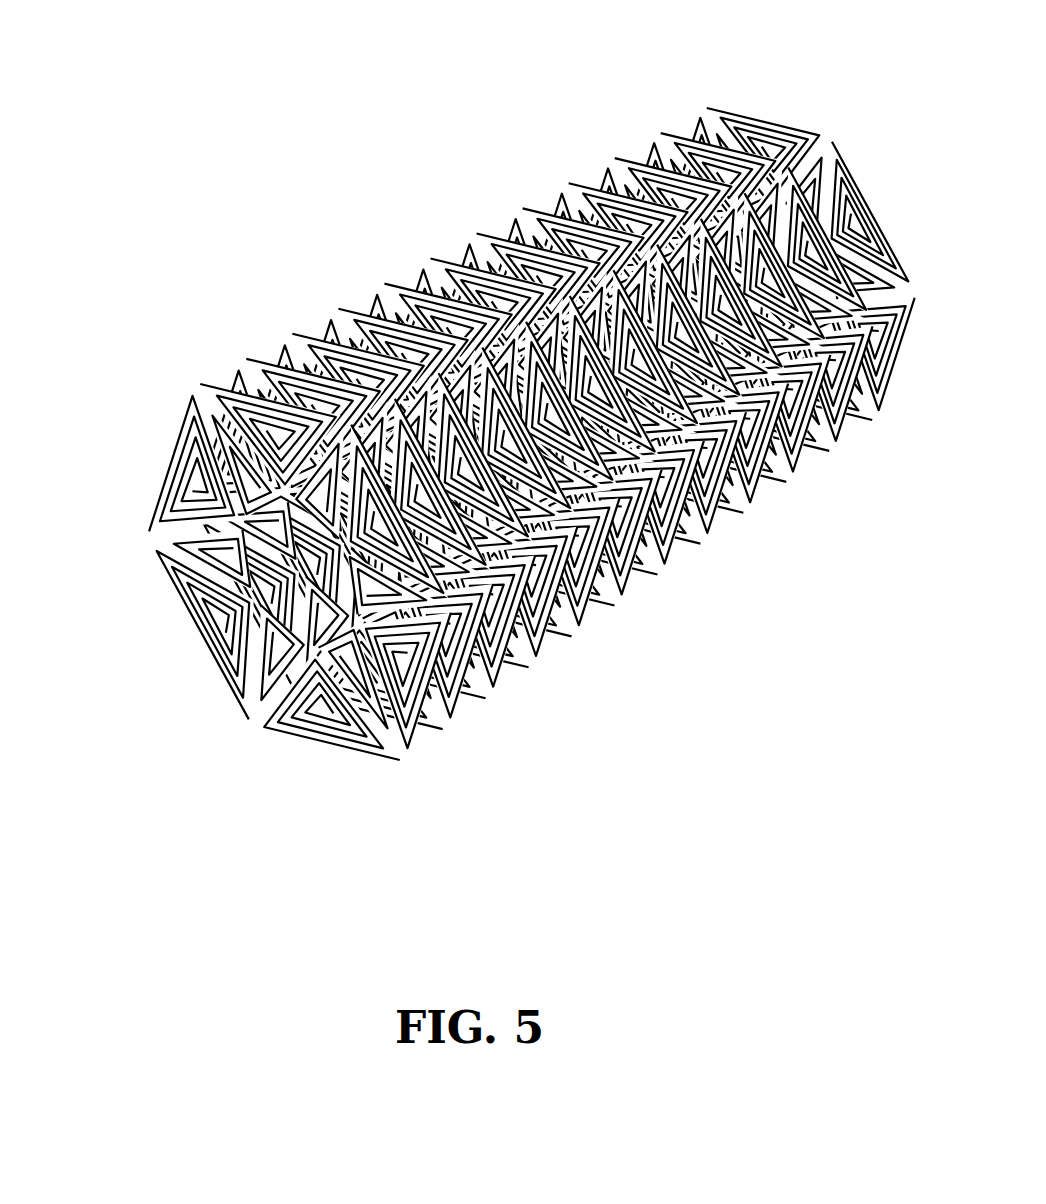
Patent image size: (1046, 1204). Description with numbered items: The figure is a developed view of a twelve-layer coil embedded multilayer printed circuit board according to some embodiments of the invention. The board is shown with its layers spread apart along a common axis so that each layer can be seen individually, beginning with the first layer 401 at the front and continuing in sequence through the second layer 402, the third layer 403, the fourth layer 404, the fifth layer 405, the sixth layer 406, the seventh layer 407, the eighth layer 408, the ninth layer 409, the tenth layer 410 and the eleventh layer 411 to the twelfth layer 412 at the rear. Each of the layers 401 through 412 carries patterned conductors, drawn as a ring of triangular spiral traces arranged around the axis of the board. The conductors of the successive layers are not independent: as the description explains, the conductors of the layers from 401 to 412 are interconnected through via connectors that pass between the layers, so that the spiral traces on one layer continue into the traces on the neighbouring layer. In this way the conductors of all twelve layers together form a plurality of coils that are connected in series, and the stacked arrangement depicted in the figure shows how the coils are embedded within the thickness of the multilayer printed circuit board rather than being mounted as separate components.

The first layer 401 is at (172, 374).
The second layer 402 is at (222, 348).
The third layer 403 is at (265, 316).
The fourth layer 404 is at (310, 291).
The fifth layer 405 is at (360, 254).
The sixth layer 406 is at (407, 228).
The seventh layer 407 is at (452, 206).
The eighth layer 408 is at (497, 181).
The ninth layer 409 is at (530, 150).
The tenth layer 410 is at (587, 133).
The eleventh layer 411 is at (643, 100).
The twelfth layer 412 is at (690, 97).